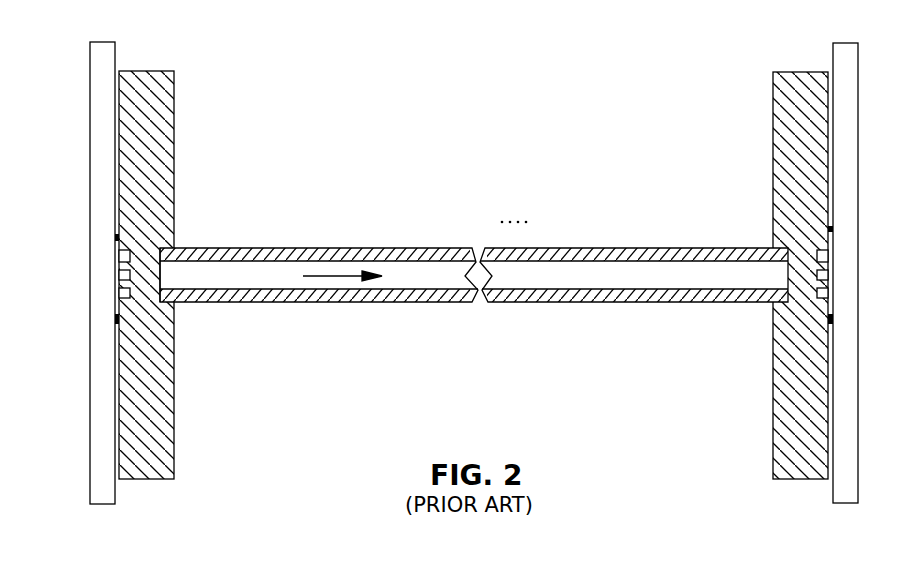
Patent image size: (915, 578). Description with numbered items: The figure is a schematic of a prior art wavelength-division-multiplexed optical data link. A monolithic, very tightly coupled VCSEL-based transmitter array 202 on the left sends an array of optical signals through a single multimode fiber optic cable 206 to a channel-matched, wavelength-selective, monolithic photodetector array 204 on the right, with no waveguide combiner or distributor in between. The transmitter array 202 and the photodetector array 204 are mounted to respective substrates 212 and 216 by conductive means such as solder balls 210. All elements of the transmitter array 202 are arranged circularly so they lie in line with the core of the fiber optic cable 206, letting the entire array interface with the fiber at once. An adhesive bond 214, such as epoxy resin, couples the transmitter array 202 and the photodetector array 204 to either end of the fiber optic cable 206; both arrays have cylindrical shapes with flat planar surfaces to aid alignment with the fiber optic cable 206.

The VCSEL-based transmitter array 202 is at (158, 71).
The photodetector array 204 is at (797, 72).
The multimode fiber optic cable 206 is at (283, 248).
The solder balls 210 is at (117, 320).
The substrate 212 is at (102, 505).
The adhesive bond 214 is at (175, 303).
The substrate 216 is at (846, 504).